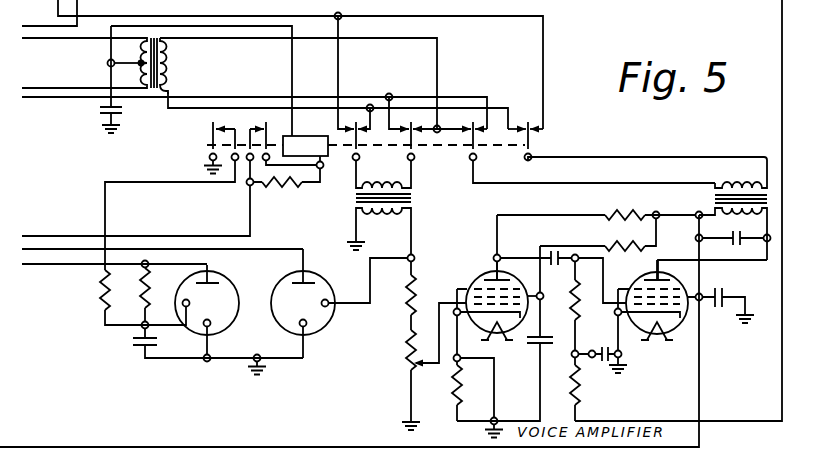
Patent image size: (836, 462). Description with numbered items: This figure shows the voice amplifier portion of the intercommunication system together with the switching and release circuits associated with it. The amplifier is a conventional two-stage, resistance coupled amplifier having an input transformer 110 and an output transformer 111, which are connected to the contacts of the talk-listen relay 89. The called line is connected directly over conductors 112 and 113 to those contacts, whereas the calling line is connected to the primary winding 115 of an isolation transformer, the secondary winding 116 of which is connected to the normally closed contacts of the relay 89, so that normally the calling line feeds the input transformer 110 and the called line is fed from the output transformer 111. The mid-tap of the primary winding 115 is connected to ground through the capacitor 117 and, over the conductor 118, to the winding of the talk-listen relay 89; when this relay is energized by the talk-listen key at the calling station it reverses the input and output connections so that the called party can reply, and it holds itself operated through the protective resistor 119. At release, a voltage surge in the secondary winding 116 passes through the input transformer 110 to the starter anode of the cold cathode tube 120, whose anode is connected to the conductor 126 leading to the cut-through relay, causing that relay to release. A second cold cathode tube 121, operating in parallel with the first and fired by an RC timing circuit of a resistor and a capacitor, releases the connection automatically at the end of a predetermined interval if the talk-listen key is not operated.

The talk-listen relay 89 is at (316, 131).
The input transformer 110 is at (412, 204).
The output transformer 111 is at (715, 199).
The conductor 112 is at (218, 97).
The conductor 113 is at (543, 80).
The primary winding 115 is at (143, 78).
The secondary winding 116 is at (172, 62).
The capacitor 117 is at (100, 113).
The conductor 118 is at (292, 57).
The protective resistor 119 is at (283, 187).
The cold cathode tube 120 is at (330, 269).
The second cold cathode tube 121 is at (230, 284).
The conductor 126 is at (270, 251).